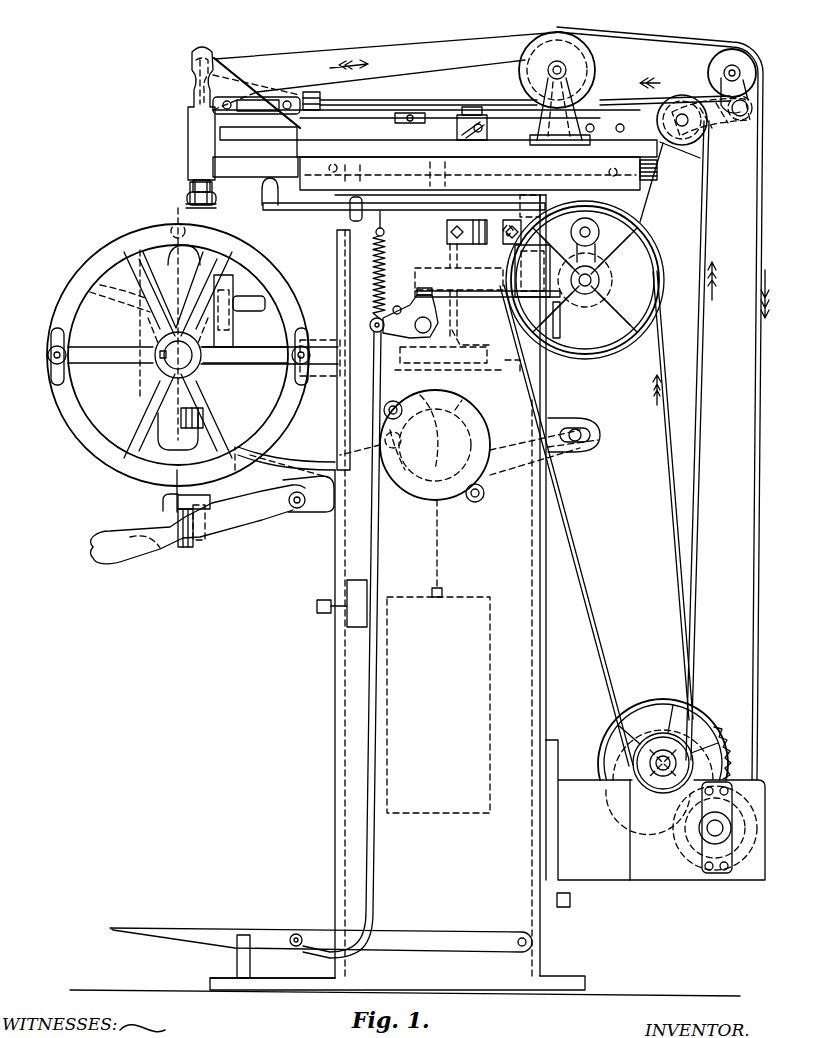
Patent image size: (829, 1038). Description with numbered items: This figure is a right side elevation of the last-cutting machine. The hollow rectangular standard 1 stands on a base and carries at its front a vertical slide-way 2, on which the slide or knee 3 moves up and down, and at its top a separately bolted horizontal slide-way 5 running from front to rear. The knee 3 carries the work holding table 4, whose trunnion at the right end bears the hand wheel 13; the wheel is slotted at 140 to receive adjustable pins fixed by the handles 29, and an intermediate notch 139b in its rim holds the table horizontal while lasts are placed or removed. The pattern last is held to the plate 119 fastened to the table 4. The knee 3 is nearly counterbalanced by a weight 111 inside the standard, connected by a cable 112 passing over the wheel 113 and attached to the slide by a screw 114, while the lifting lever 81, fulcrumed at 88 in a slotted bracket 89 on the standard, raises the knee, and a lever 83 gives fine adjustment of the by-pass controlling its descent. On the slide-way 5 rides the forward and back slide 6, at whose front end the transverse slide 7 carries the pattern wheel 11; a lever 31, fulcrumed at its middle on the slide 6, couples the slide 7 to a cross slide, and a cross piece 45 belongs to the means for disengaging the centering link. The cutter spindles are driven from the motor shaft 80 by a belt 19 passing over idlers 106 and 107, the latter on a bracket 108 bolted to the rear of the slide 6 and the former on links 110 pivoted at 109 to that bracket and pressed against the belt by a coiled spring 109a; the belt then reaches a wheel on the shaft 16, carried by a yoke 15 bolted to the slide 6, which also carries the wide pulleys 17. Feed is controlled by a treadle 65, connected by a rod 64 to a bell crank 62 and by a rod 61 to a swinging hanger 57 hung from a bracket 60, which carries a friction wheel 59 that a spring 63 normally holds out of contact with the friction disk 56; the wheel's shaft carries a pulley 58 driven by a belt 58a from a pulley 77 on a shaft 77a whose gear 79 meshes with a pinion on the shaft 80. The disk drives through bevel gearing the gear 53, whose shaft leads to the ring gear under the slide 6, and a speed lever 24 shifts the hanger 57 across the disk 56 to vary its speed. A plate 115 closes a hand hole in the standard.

The standard 1 is at (340, 712).
The vertical slide-way 2 is at (337, 255).
The slide or knee 3 is at (298, 462).
The work holding table 4 is at (228, 302).
The horizontal slide-way 5 is at (640, 185).
The forward and back slide 6 is at (648, 150).
The transverse slide 7 is at (222, 86).
The pattern wheel 11 is at (185, 202).
The hand wheel 13 is at (100, 448).
The yoke 15 is at (560, 93).
The shaft 16 is at (548, 70).
The wide pulleys 17 is at (535, 50).
The belt 19 is at (662, 44).
The speed lever 24 is at (298, 211).
The handles 29 is at (48, 356).
The lever 31 is at (350, 130).
The cross piece 45 is at (463, 118).
The gear 53 is at (497, 268).
The friction disk 56 is at (560, 330).
The swinging hanger 57 is at (620, 222).
The pulley 58 is at (636, 244).
The belt 58a is at (680, 520).
The friction wheel 59 is at (600, 283).
The bracket 60 is at (450, 233).
The rod 61 is at (472, 298).
The bell crank 62 is at (418, 303).
The spring 63 is at (374, 278).
The rod 64 is at (366, 890).
The treadle 65 is at (217, 932).
The pulley 77 is at (643, 740).
The shaft 77a is at (642, 768).
The gear 79 is at (665, 703).
The motor shaft 80 is at (713, 830).
The lifting lever 81 is at (107, 553).
The lever 83 is at (165, 504).
The fulcrum 88 is at (575, 423).
The slotted bracket 89 is at (587, 448).
The swinging idler 106 is at (687, 97).
The idler 107 is at (731, 62).
The bracket 108 is at (737, 86).
The pivot pin 109 is at (750, 108).
The coiled spring 109a is at (718, 122).
The links 110 is at (700, 155).
The weight 111 is at (400, 770).
The cable 112 is at (440, 557).
The wheel 113 is at (428, 432).
The screw 114 is at (318, 606).
The plate 115 is at (472, 430).
The plate or chuck frame 119 is at (174, 229).
The intermediate notch 139b is at (180, 240).
The slots 140 is at (58, 382).